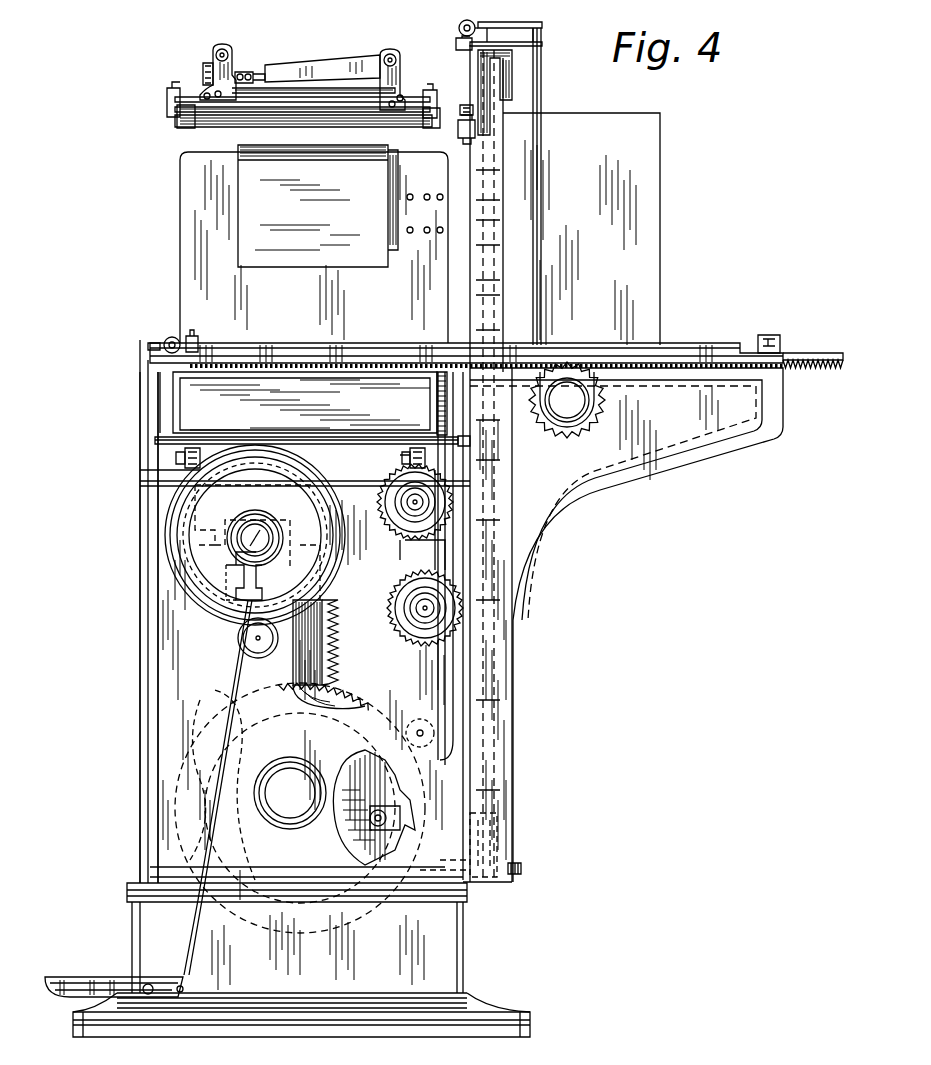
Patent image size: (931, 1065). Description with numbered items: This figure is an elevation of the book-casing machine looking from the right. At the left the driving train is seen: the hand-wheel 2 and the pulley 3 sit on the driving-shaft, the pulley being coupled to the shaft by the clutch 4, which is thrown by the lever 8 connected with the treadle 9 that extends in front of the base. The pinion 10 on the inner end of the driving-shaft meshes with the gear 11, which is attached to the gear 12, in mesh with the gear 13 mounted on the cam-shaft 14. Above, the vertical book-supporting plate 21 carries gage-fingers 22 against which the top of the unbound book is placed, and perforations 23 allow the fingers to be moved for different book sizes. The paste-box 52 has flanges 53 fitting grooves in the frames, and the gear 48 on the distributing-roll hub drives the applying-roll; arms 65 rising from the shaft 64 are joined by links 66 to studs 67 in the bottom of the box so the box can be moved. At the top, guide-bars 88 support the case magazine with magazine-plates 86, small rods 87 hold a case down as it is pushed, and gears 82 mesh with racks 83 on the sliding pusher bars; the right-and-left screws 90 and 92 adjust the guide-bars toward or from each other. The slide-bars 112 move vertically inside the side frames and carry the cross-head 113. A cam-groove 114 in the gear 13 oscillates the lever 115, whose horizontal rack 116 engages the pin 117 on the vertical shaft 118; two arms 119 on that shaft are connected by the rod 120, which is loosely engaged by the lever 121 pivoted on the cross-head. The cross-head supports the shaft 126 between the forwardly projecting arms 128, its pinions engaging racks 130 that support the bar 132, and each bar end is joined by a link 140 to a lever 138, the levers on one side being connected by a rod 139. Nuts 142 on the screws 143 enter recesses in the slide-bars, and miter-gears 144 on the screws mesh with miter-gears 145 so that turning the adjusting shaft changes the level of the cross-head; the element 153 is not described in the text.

The hand-wheel 2 is at (255, 535).
The pulley 3 is at (158, 523).
The clutch 4 is at (276, 533).
The lever 8 is at (258, 583).
The treadle 9 is at (76, 980).
The pinion 10 is at (258, 511).
The gear 11 is at (333, 614).
The gear 12 is at (338, 642).
The gear 13 is at (348, 701).
The cam-shaft 14 is at (290, 793).
The book-supporting plate 21 is at (314, 247).
The gage-finger 22 is at (388, 172).
The perforations 23 is at (425, 233).
The gear 48 is at (437, 398).
The paste-box 52 is at (298, 402).
The flanges 53 is at (155, 438).
The shaft 64 is at (366, 567).
The arms 65 is at (160, 484).
The links 66 is at (198, 456).
The studs 67 is at (196, 450).
The gears 82 is at (598, 442).
The racks 83 is at (820, 352).
The magazine-plates 86 is at (581, 229).
The small rods 87 is at (194, 336).
The guide-bars 88 is at (688, 347).
The screw 90 is at (164, 341).
The screw 92 is at (782, 332).
The slide-bars 112 is at (500, 242).
The cross-head 113 is at (512, 90).
The cam-groove 114 is at (395, 790).
The lever 115 is at (405, 811).
The horizontal rack 116 is at (521, 868).
The pin 117 is at (490, 883).
The vertical shaft 118 is at (508, 679).
The arms 119 is at (543, 25).
The rod 120 is at (505, 60).
The lever 121 is at (543, 46).
The shaft 126 is at (203, 72).
The arms 128 is at (326, 67).
The rack 130 is at (214, 54).
The bar 132 is at (275, 60).
The lever 138 is at (177, 118).
The rod 139 is at (185, 128).
The link 140 is at (167, 100).
The nuts 142 is at (475, 130).
The screws 143 is at (473, 108).
The miter-gears 144 is at (462, 21).
The miter-gears 145 is at (456, 40).
The end piece 153 is at (470, 440).